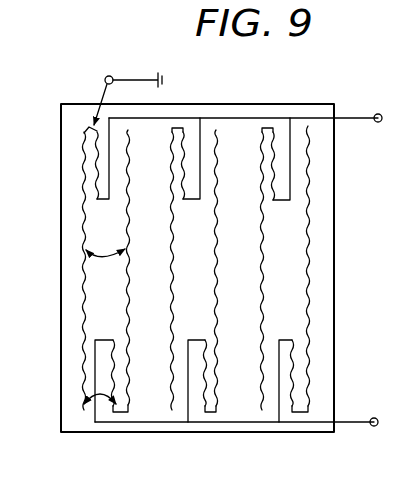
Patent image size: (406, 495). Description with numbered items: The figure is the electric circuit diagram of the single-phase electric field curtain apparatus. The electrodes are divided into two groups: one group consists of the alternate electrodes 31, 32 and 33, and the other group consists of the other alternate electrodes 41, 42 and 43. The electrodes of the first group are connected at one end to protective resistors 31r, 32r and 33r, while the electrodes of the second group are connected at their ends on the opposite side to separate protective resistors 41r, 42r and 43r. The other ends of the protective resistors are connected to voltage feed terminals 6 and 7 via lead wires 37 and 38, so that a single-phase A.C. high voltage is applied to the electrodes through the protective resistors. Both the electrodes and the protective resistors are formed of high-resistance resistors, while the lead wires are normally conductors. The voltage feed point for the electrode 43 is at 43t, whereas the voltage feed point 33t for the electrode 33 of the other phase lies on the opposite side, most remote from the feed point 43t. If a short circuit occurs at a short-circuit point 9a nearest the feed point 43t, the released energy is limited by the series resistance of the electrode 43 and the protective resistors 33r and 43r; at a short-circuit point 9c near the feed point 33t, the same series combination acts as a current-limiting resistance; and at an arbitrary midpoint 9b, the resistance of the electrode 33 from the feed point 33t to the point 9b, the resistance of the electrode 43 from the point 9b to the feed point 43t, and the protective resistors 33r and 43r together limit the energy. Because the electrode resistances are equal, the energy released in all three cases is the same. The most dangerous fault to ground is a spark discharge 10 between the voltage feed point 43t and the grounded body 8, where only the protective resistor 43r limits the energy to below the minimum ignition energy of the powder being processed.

The voltage feed terminal 6 is at (374, 417).
The voltage feed terminal 7 is at (377, 123).
The grounded body 8 is at (109, 76).
The short-circuit point 9a is at (124, 131).
The short-circuit point 9b is at (97, 258).
The short-circuit point 9c is at (96, 398).
The spark discharge 10 is at (101, 88).
The electrode 31 is at (308, 183).
The protective resistor 31r is at (290, 395).
The electrode 32 is at (217, 253).
The protective resistor 32r is at (197, 383).
The electrode 33 is at (128, 390).
The protective resistor 33r is at (113, 366).
The voltage feed point 33t is at (115, 413).
The lead wire 37 is at (343, 424).
The lead wire 38 is at (357, 117).
The electrode 41 is at (260, 145).
The protective resistor 41r is at (285, 130).
The electrode 42 is at (174, 253).
The protective resistor 42r is at (185, 165).
The electrode 43 is at (84, 285).
The protective resistor 43r is at (96, 177).
The voltage feed point 43t is at (86, 124).